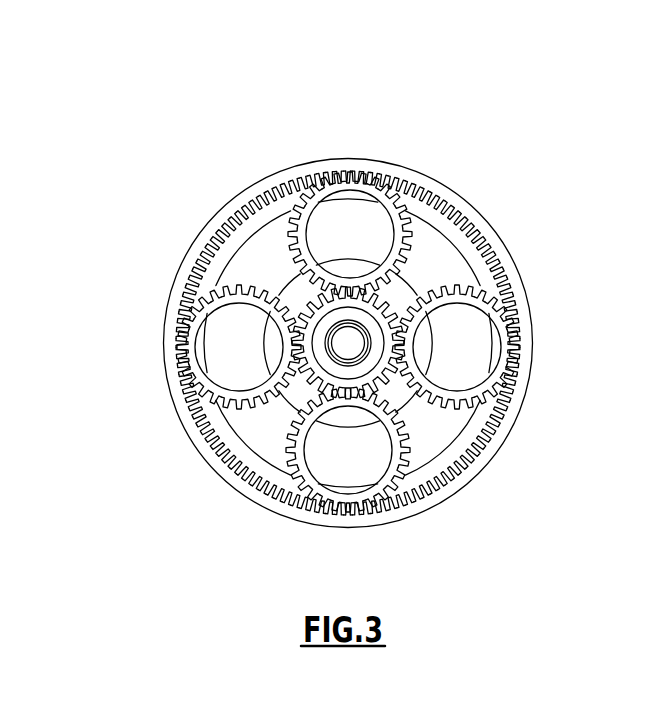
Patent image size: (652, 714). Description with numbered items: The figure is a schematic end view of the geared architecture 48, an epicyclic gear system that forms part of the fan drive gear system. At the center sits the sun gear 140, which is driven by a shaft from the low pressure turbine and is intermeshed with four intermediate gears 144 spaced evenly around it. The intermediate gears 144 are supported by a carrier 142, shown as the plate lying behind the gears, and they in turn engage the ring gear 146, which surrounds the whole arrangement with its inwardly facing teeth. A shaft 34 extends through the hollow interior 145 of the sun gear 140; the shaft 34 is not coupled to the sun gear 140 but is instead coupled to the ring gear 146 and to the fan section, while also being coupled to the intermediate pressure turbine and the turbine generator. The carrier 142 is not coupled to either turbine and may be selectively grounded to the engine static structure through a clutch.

The geared architecture 48 is at (367, 300).
The shaft 34 is at (366, 334).
The sun gear 140 is at (322, 372).
The carrier 142 is at (432, 257).
The intermediate gears 144 is at (331, 186).
The hollow interior 145 is at (346, 335).
The ring gear 146 is at (445, 493).